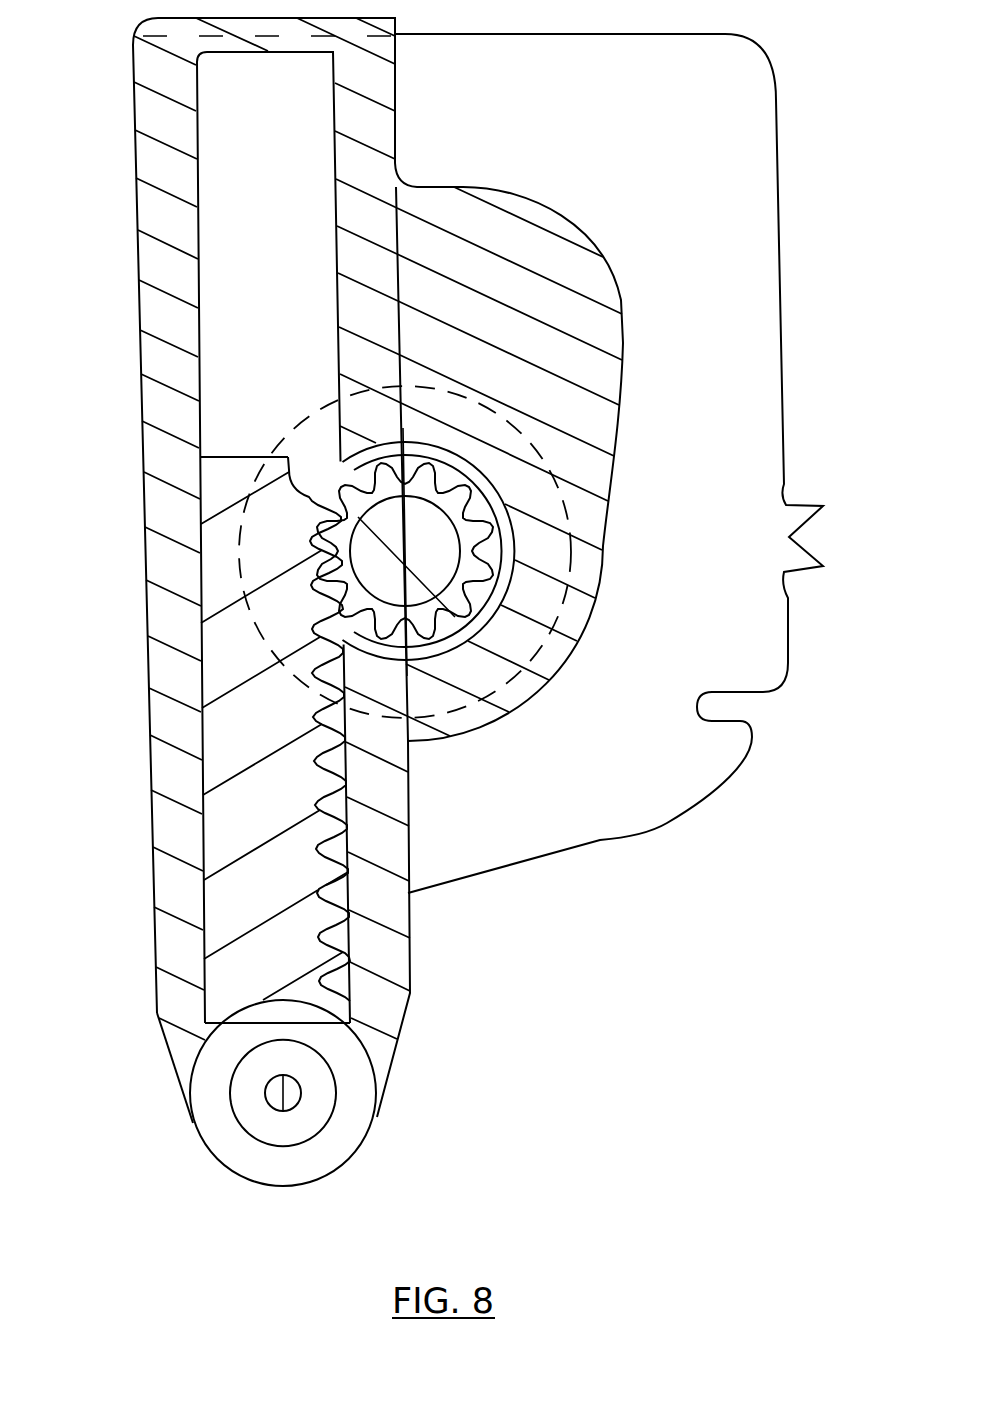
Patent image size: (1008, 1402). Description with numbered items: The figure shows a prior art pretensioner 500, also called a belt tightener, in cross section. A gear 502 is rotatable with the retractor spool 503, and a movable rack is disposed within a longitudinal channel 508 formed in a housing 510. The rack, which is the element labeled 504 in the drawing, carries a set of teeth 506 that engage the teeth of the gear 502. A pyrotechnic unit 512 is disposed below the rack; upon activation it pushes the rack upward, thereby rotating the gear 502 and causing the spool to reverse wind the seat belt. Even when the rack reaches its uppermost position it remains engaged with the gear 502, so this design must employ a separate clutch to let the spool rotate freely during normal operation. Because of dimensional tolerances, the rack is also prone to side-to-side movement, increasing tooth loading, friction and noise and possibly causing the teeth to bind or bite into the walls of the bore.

The pretensioner 500 is at (916, 348).
The gear 502 is at (493, 571).
The retractor spool 503 is at (500, 683).
The rack arm 504 is at (217, 760).
The teeth 506 is at (317, 915).
The longitudinal channel 508 is at (206, 674).
The housing 510 is at (175, 932).
The pyrotechnic unit 512 is at (318, 1110).